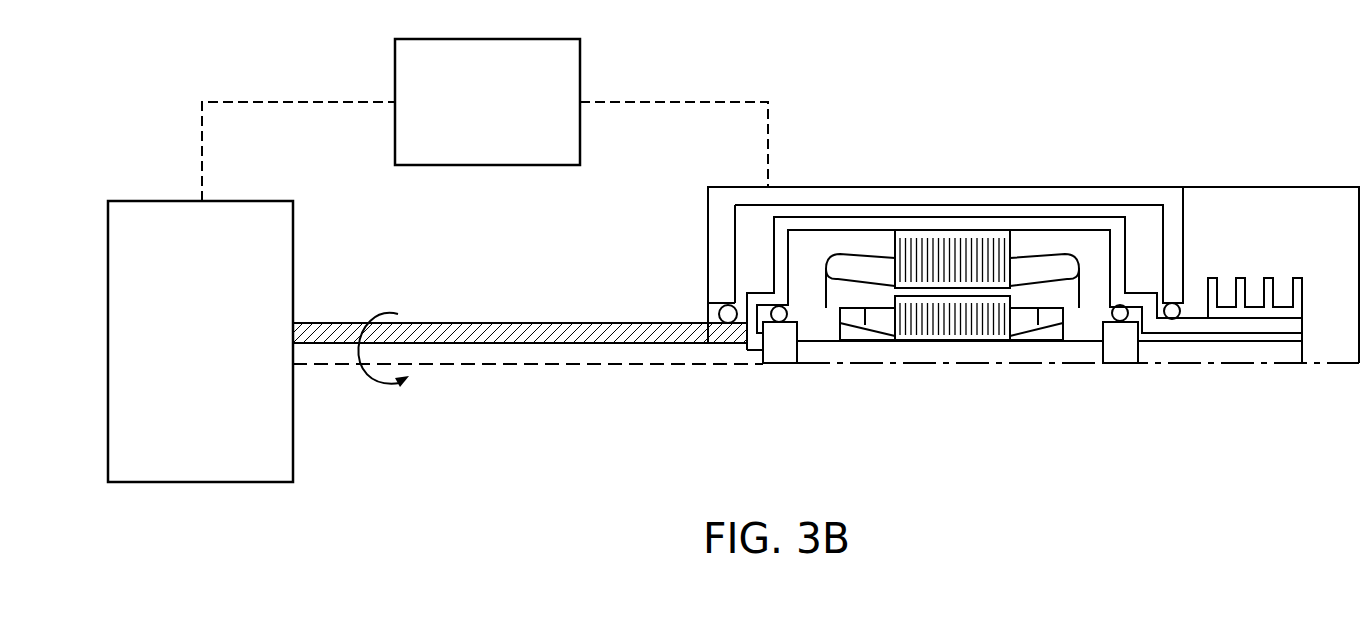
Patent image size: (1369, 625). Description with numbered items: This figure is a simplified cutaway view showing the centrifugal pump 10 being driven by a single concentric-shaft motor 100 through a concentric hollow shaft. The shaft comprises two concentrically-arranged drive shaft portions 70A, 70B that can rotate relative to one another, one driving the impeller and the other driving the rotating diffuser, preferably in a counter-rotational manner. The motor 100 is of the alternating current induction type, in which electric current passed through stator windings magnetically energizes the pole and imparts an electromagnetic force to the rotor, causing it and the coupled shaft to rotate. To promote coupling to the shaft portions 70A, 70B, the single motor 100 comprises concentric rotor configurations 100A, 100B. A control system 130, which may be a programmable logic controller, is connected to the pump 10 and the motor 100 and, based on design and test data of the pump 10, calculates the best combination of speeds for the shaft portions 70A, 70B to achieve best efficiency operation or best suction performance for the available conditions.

The centrifugal pump 10 is at (215, 354).
The control system 130 is at (510, 116).
The drive shaft portion 70A is at (578, 352).
The drive shaft portion 70B is at (535, 328).
The single concentric-shaft motor 100 is at (1033, 251).
The concentric rotor configuration 100A is at (945, 320).
The concentric rotor configuration 100B is at (943, 248).